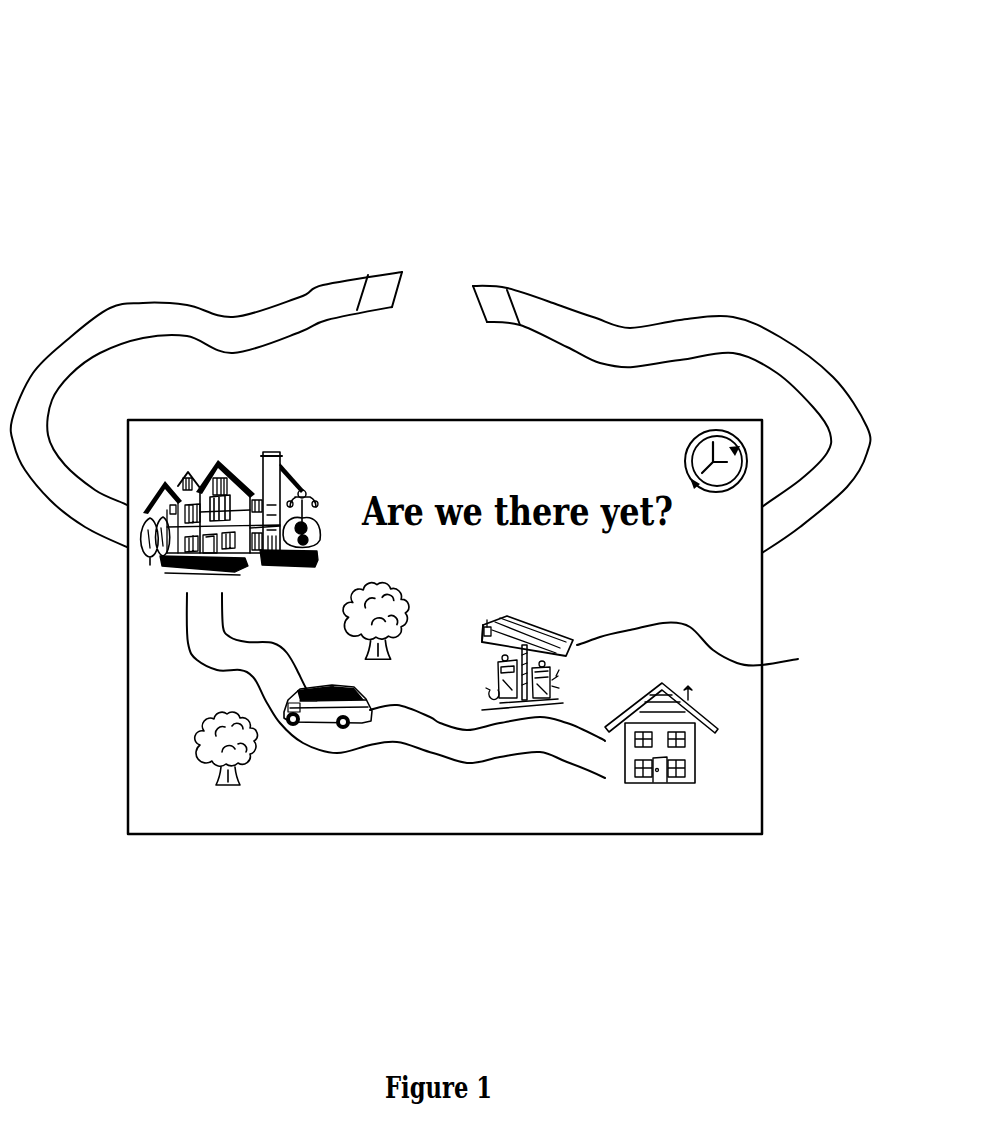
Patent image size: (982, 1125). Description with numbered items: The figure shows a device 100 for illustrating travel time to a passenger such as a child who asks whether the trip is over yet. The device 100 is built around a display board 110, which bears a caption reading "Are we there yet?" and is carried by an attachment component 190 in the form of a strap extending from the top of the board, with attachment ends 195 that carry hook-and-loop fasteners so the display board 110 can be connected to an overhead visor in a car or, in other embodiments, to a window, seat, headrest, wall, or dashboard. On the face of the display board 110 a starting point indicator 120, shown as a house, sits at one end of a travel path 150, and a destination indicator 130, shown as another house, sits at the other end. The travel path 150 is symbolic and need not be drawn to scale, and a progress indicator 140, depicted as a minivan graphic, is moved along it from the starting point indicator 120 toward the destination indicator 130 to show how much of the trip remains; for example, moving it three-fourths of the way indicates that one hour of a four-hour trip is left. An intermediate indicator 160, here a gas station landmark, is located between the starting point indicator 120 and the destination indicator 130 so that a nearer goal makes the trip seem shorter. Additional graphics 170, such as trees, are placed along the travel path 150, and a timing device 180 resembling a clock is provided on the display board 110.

The device 100 is at (154, 61).
The display board 110 is at (762, 790).
The starting point indicator 120 is at (177, 567).
The destination indicator 130 is at (652, 782).
The progress indicator 140 is at (327, 723).
The travel path 150 is at (470, 765).
The intermediate indicator 160 is at (660, 663).
The additional graphics 170 is at (222, 760).
The timing device 180 is at (683, 460).
The attachment component 190 is at (67, 340).
The attachment ends 195 is at (392, 270).